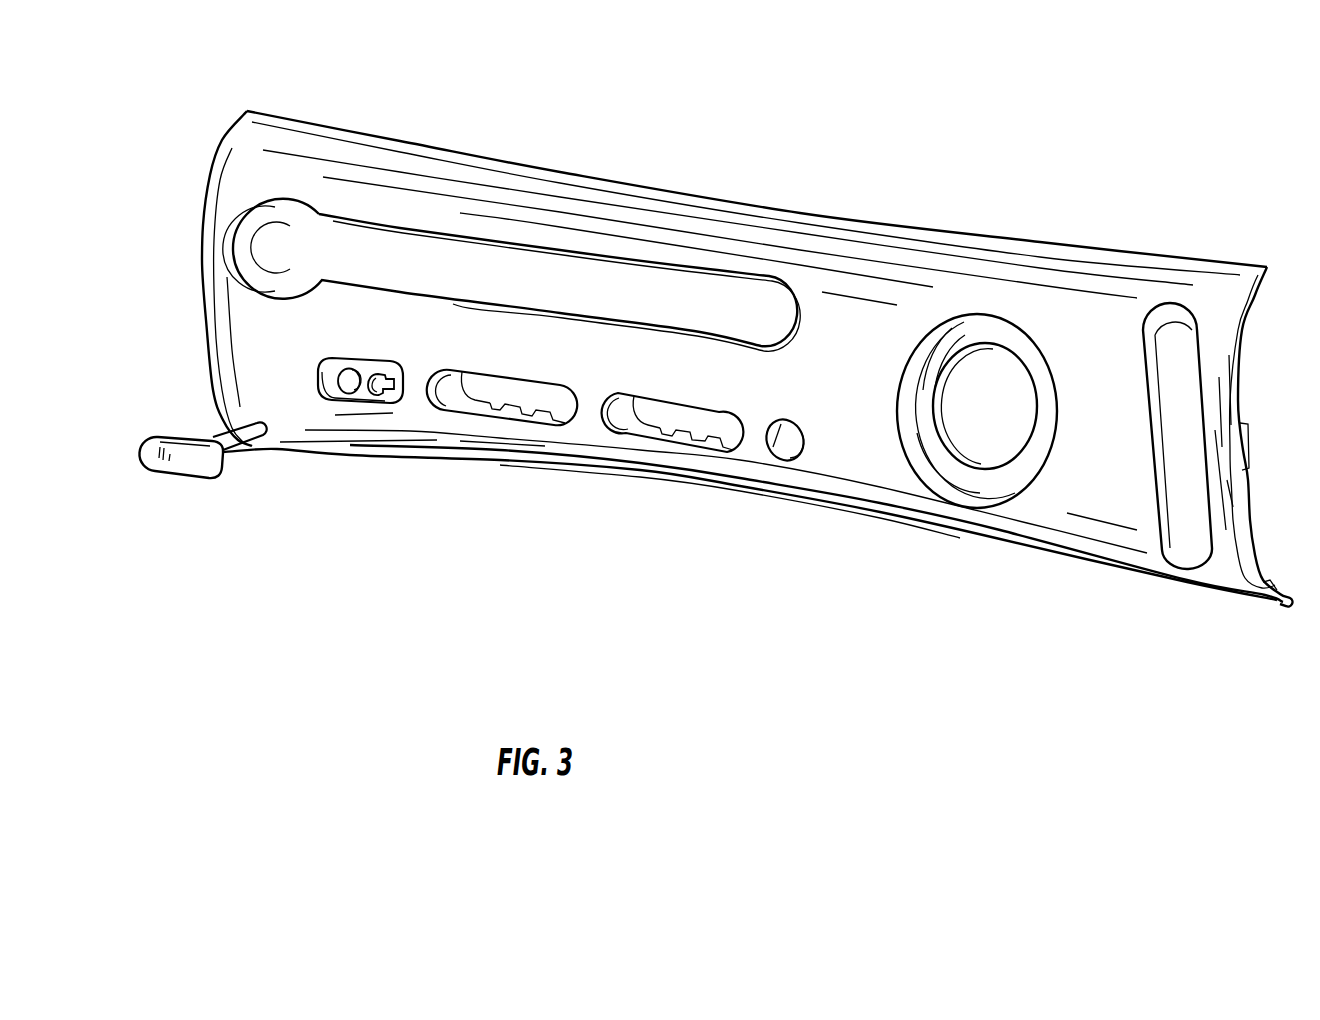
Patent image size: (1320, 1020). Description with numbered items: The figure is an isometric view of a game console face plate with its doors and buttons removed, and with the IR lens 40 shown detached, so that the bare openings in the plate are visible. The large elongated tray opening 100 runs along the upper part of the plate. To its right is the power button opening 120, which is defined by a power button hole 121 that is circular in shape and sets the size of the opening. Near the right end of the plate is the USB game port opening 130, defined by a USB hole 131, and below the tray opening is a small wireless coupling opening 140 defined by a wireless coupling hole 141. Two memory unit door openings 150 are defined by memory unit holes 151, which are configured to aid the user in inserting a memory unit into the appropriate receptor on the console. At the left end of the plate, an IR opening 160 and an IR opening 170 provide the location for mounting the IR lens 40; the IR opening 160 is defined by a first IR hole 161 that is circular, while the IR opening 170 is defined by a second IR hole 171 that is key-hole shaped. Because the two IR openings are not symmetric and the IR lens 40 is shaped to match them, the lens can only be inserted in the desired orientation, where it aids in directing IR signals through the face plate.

The tray opening 100 is at (505, 262).
The power button opening 120 is at (982, 363).
The power button hole 121 is at (985, 466).
The USB game port opening 130 is at (1187, 532).
The USB hole 131 is at (1187, 547).
The wireless coupling opening 140 is at (773, 465).
The wireless coupling hole 141 is at (787, 462).
The memory unit door openings 150 is at (535, 403).
The memory unit holes 151 is at (557, 417).
The IR opening 160 is at (340, 390).
The first IR hole 161 is at (337, 374).
The IR opening 170 is at (365, 390).
The second IR hole 171 is at (368, 383).
The IR lens 40 is at (197, 475).